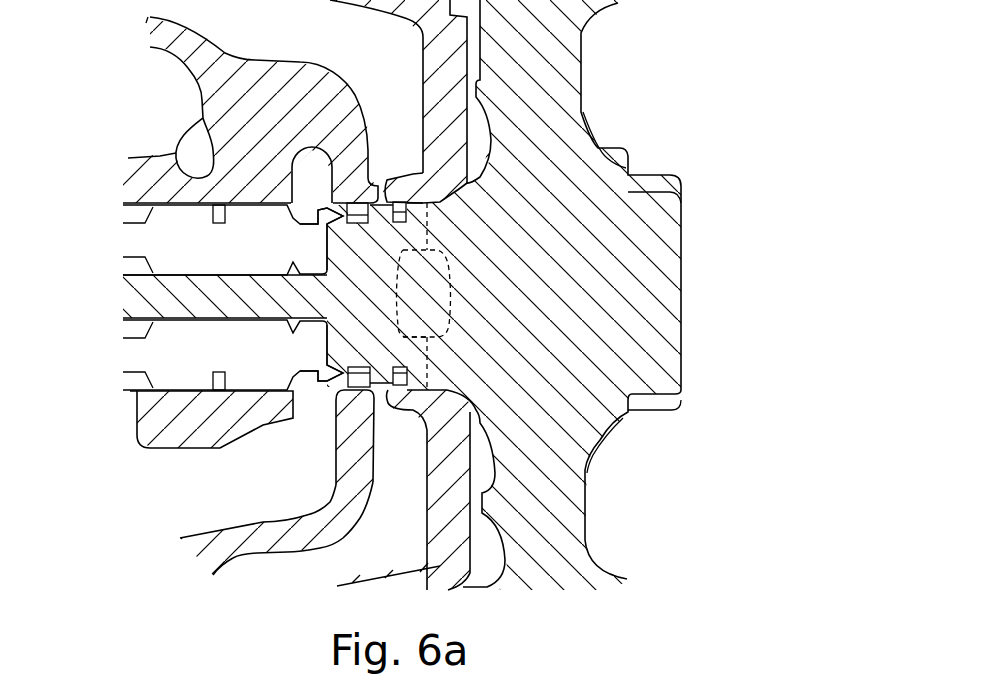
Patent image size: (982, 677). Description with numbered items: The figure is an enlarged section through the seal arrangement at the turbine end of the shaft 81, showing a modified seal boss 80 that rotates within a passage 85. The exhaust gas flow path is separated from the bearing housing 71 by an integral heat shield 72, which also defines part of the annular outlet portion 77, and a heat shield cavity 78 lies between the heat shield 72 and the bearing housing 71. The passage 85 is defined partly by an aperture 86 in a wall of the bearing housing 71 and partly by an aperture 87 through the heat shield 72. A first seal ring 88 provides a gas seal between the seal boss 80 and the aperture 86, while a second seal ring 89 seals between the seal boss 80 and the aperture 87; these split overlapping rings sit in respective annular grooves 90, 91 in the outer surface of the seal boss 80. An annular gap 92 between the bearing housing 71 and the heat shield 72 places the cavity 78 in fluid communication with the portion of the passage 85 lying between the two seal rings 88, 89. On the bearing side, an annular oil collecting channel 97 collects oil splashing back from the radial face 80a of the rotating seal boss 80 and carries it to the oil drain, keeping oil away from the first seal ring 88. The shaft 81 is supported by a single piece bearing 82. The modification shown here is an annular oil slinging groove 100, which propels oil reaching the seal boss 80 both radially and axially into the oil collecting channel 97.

The bearing housing 71 is at (360, 485).
The heat shield 72 is at (447, 87).
The annular outlet portion 77 is at (547, 537).
The heat shield cavity 78 is at (383, 100).
The seal boss 80 is at (347, 303).
The radial face 80a is at (320, 235).
The shaft 81 is at (183, 300).
The bearing 82 is at (150, 243).
The passage 85 is at (410, 206).
The aperture 86 is at (338, 413).
The aperture 87 is at (413, 411).
The first seal ring 88 is at (347, 200).
The second seal ring 89 is at (423, 253).
The annular groove 90 is at (335, 392).
The annular groove 91 is at (410, 370).
The annular gap 92 is at (387, 178).
The annular oil collecting channel 97 is at (307, 160).
The annular oil slinging groove 100 is at (343, 373).